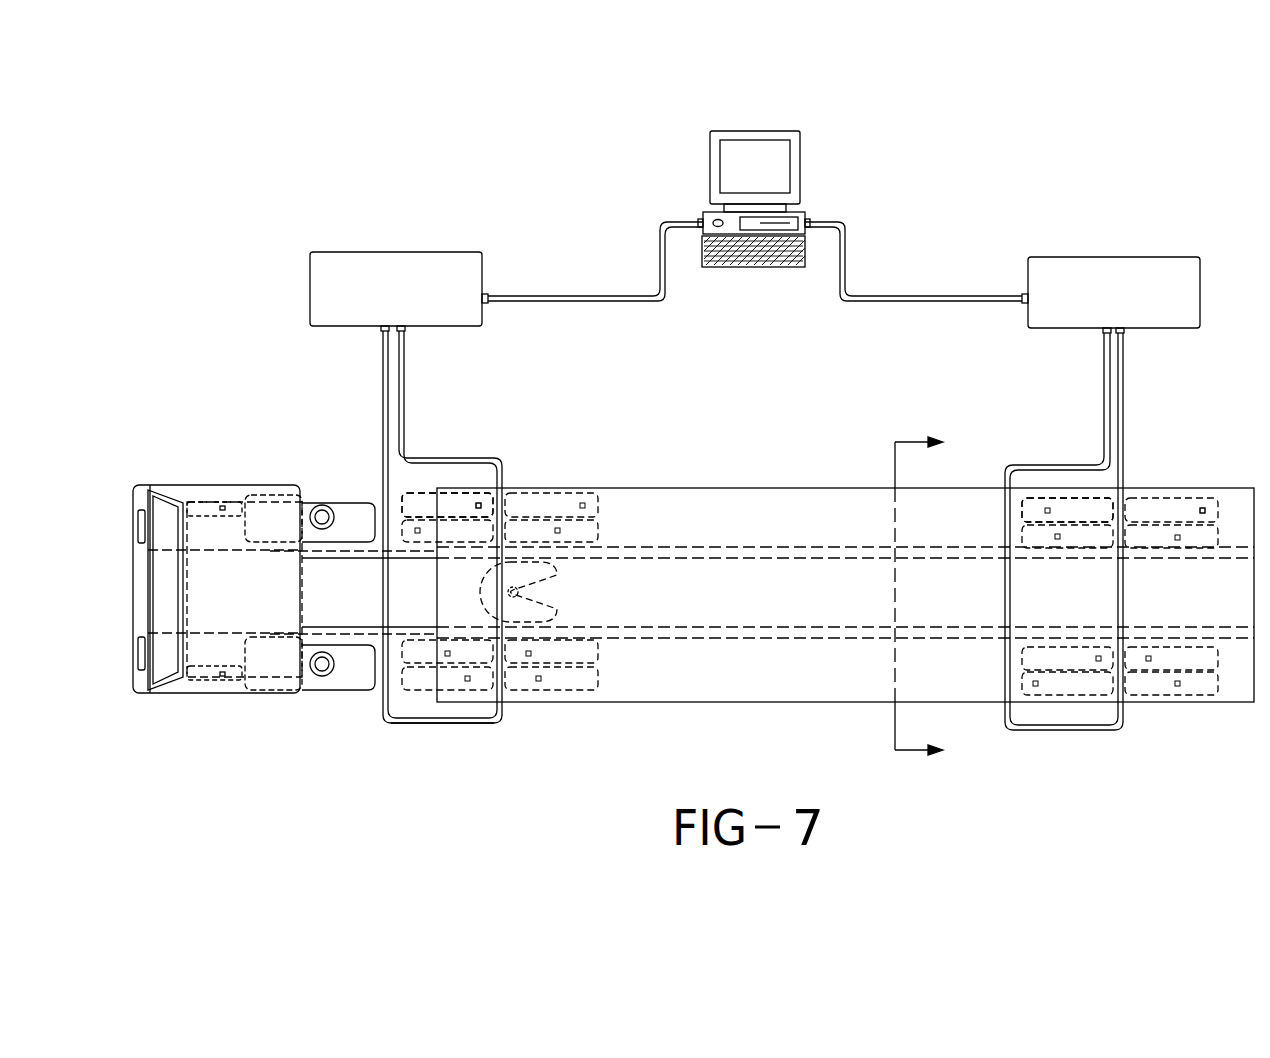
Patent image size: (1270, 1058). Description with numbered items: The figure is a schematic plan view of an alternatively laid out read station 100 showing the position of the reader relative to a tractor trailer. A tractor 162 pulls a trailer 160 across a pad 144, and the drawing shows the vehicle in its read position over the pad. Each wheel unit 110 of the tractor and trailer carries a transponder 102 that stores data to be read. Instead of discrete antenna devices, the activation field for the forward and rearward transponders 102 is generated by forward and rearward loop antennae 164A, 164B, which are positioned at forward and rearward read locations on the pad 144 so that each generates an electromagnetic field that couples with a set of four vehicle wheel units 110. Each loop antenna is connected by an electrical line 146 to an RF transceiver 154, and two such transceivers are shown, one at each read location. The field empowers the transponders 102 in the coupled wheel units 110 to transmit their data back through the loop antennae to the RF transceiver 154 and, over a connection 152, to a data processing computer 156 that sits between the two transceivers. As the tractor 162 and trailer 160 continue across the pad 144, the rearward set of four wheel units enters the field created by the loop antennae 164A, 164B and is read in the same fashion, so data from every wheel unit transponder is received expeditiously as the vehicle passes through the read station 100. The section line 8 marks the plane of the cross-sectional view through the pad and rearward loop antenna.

The read station 100 is at (1152, 168).
The transponder 102 is at (481, 503).
The wheel unit 110 is at (455, 490).
The pad 144 is at (455, 742).
The electrical line 146 is at (405, 381).
The connection 152 is at (570, 295).
The RF transceiver 154 is at (437, 252).
The data processing computer 156 is at (752, 160).
The trailer 160 is at (595, 701).
The tractor 162 is at (233, 690).
The forward loop antenna 164A is at (500, 723).
The rearward loop antenna 164B is at (1125, 600).
The section line 8- 8 is at (930, 599).